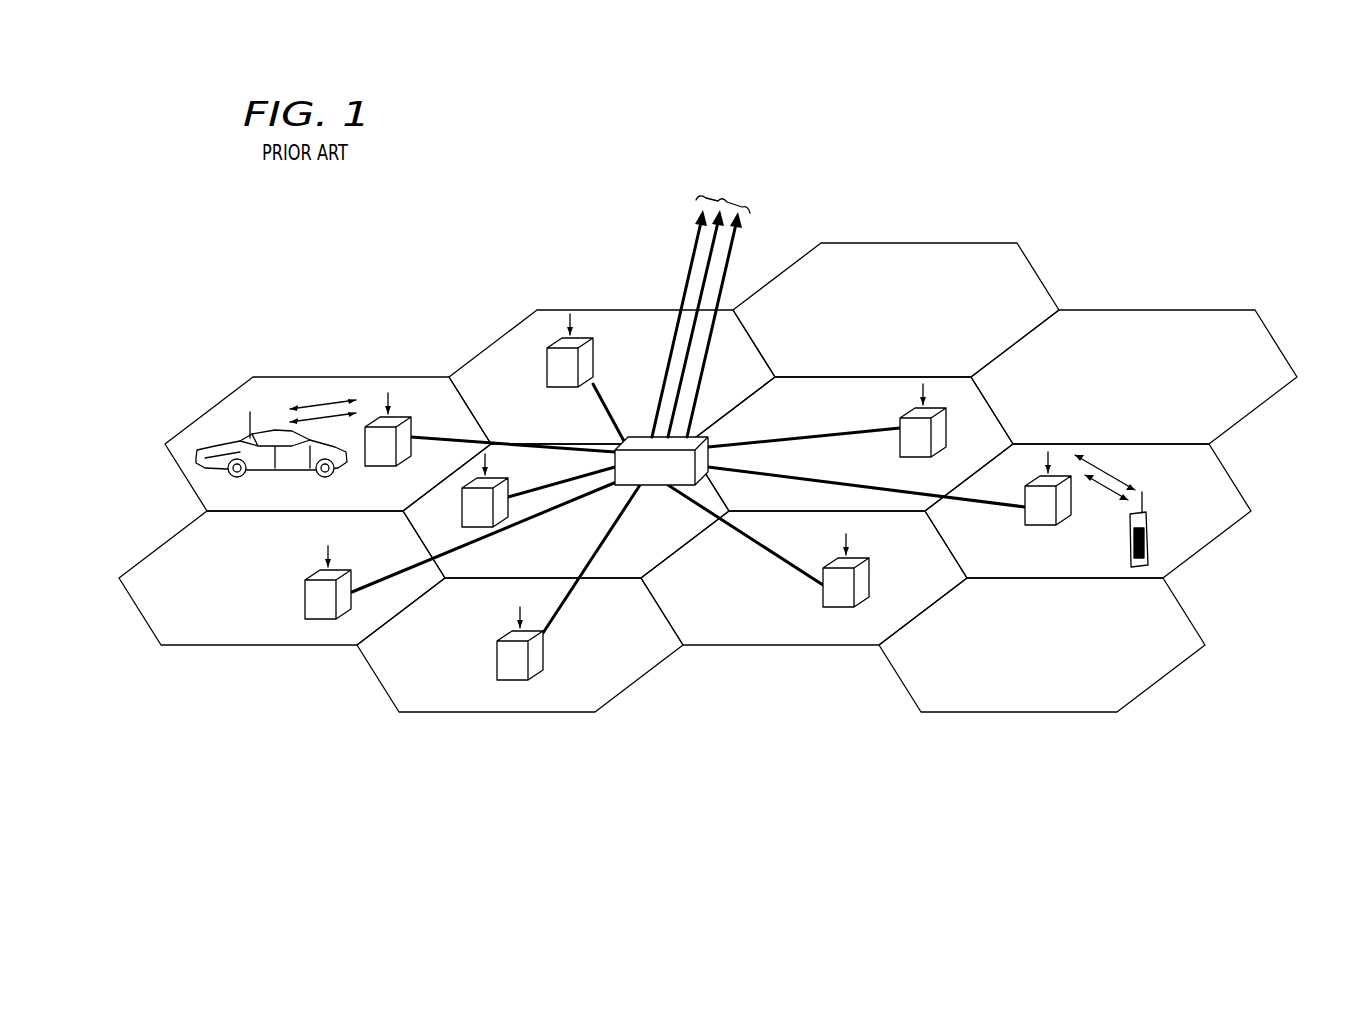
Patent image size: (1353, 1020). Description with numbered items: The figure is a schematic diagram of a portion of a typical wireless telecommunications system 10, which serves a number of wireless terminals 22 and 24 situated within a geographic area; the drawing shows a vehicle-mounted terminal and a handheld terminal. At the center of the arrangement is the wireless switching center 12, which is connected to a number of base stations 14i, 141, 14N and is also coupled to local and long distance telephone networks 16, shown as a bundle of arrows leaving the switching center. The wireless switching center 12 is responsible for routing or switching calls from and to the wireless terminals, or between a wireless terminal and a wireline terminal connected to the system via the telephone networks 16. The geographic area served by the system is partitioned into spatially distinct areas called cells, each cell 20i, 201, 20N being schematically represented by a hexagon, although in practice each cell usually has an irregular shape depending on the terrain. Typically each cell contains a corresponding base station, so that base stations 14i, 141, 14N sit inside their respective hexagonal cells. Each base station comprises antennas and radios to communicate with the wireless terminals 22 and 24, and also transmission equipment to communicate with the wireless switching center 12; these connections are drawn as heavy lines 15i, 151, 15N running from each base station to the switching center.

The wireless telecommunications system 10 is at (226, 284).
The wireless switching center 12 is at (648, 488).
The base station 14i is at (305, 597).
The base station 141 is at (497, 658).
The base station 14N is at (871, 578).
The communication link 15i is at (405, 567).
The communication link 151 is at (563, 605).
The communication link 15N is at (767, 552).
The local and long distance telephone networks 16 is at (722, 200).
The cell 20i is at (217, 636).
The cell 201 is at (619, 697).
The cell 20N is at (736, 630).
The wireless terminal 22 is at (228, 435).
The wireless terminal 24 is at (1149, 528).